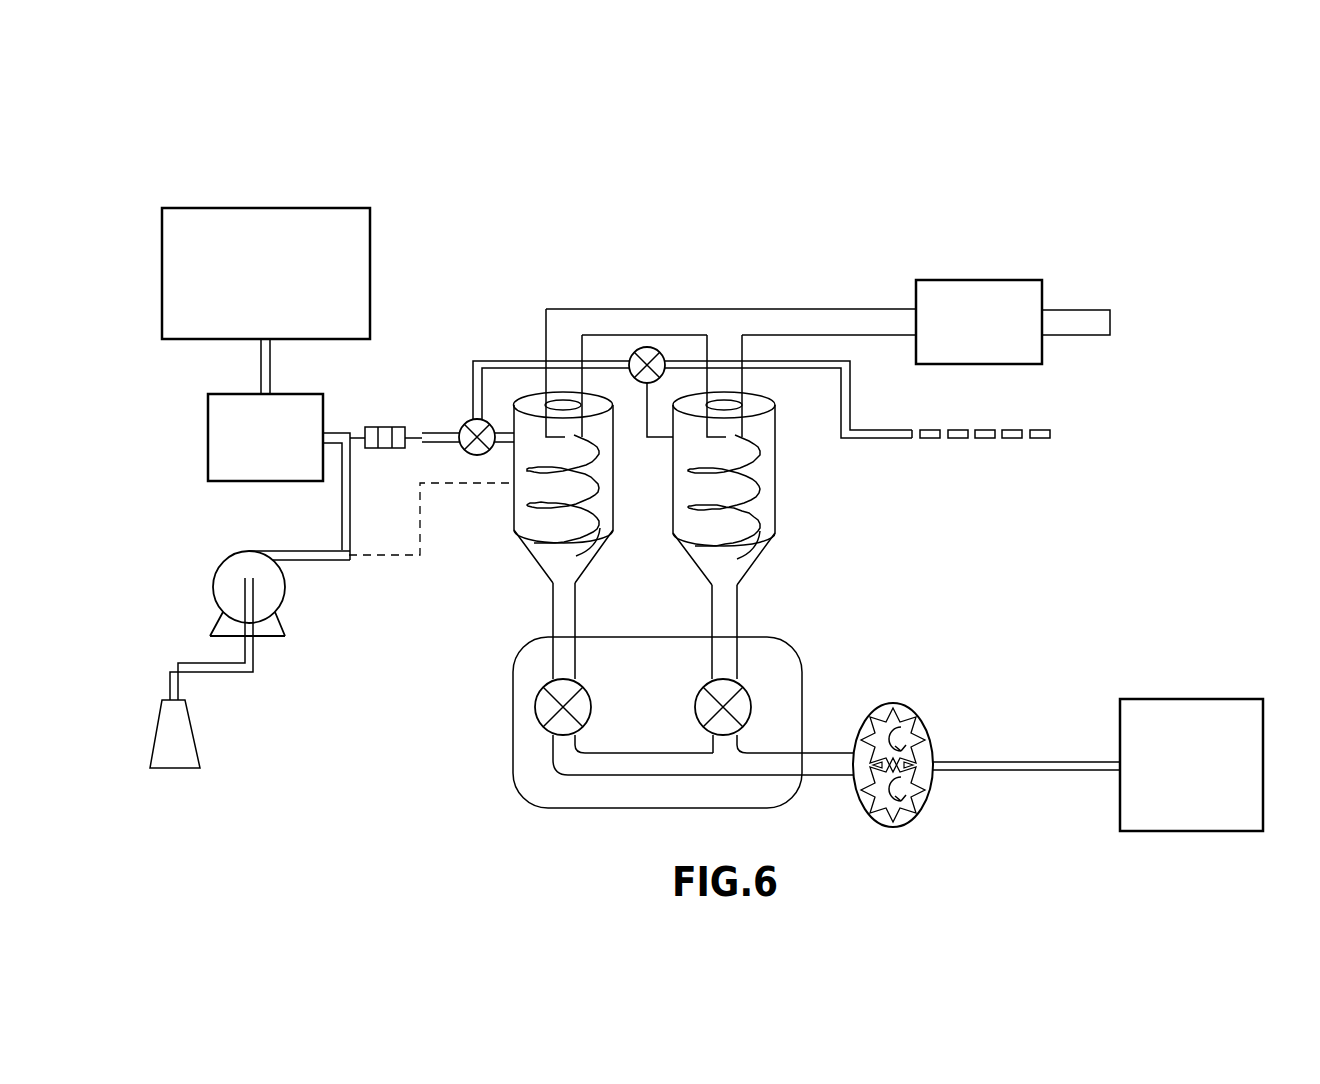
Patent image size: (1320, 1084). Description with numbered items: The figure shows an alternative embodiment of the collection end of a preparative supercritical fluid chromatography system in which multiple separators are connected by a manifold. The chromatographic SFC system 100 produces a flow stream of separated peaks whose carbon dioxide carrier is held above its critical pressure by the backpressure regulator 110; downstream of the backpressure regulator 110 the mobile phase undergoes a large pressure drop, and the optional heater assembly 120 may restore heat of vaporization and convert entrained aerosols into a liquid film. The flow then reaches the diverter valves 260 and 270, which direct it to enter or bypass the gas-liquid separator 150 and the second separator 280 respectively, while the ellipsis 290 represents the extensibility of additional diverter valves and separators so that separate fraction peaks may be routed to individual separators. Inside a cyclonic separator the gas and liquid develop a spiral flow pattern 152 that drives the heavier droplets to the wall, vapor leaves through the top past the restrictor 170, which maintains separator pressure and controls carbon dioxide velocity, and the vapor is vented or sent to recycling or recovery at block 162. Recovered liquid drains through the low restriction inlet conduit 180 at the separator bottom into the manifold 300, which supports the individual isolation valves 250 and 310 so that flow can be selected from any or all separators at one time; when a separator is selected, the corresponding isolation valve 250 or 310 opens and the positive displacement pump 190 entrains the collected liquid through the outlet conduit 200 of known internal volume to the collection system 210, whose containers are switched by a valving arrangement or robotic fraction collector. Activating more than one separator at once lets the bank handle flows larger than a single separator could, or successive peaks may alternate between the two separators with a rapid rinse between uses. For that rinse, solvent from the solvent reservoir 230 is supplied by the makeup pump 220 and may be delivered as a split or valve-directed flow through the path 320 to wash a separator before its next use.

The chromatographic SFC system 100 is at (370, 262).
The backpressure regulator 110 is at (233, 481).
The heater assembly 120 is at (385, 448).
The gas-liquid separator 150 is at (568, 568).
The spiral flow pattern 152 is at (598, 525).
The recycling and/or recovery system 162 is at (1178, 278).
The restrictor 170 is at (968, 280).
The inlet conduit 180 is at (553, 605).
The pump 190 is at (912, 708).
The outlet conduit 200 is at (1025, 762).
The collection system 210 is at (1175, 699).
The makeup pump 220 is at (283, 625).
The solvent reservoir 230 is at (200, 740).
The isolation valve 250 is at (591, 707).
The diverter valve 260 is at (467, 420).
The diverter valve 270 is at (645, 383).
The separator 280 is at (735, 567).
The ellipsis 290 is at (980, 438).
The manifold 300 is at (513, 705).
The isolation valve 310 is at (752, 703).
The path 320 is at (420, 518).